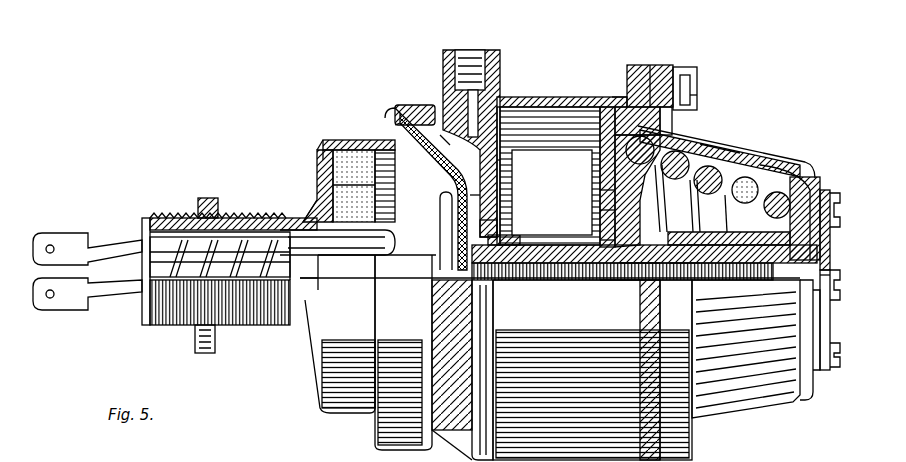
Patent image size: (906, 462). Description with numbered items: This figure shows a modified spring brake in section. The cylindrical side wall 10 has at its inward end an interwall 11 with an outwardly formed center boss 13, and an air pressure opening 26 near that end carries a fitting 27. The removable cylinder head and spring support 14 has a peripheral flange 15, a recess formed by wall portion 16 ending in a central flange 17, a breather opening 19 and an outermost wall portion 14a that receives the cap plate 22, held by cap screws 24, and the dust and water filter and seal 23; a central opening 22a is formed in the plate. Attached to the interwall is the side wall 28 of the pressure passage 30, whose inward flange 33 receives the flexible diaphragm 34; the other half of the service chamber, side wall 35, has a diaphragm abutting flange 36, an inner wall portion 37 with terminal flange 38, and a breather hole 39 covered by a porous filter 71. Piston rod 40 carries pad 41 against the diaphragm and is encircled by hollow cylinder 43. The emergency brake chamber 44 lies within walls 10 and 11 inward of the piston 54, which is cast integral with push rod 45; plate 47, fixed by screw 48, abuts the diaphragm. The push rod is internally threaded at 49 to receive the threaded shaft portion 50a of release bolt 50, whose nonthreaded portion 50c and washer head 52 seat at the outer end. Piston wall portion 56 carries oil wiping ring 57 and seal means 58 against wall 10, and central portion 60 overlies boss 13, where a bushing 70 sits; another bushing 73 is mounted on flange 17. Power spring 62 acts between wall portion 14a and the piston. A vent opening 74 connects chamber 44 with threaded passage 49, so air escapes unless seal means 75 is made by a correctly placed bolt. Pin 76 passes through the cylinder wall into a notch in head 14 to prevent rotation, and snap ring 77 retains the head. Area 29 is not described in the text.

The cylindrical side wall 10 is at (540, 97).
The interwall 11 is at (498, 160).
The interwall center boss 13 is at (500, 237).
The cylinder head and spring support 14 is at (750, 160).
The outermost wall portion of cylinder head 14a is at (800, 175).
The peripheral flange 15 is at (690, 110).
The recess wall portion 16 is at (706, 206).
The central flange 17 is at (672, 198).
The breather or vent opening 19 is at (672, 120).
The cap plate 22 is at (826, 185).
The opening in cap plate 22a is at (795, 275).
The dust and water filter and seal 23 is at (745, 189).
The cap screws 24 is at (807, 392).
The air pressure opening 26 is at (547, 176).
The fitting 27 is at (500, 58).
The side wall of pressure passage 28 is at (452, 180).
The gap 29 is at (478, 197).
The pressure passage or opening 30 is at (447, 140).
The inward flange 33 is at (422, 105).
The flexible diaphragm 34 is at (411, 155).
The service chamber side wall 35 is at (330, 140).
The diaphragm abutting flange 36 is at (390, 108).
The inner wall portion 37 is at (354, 186).
The terminal flange 38 is at (310, 210).
The breather hole 39 is at (360, 140).
The piston rod 40 is at (345, 272).
The pad 41 is at (405, 272).
The hollow cylinder 43 is at (265, 218).
The emergency or safety brake chamber 44 is at (600, 160).
The push rod 45 is at (560, 265).
The plate or disc 47 is at (440, 233).
The screw 48 is at (500, 282).
The internally threaded passage 49 is at (622, 298).
The release bolt 50 is at (680, 270).
The externally threaded shaft portion 50a is at (632, 270).
The outer nonthreaded portion 50c is at (790, 340).
The washer head 52 is at (732, 270).
The piston 54 is at (605, 190).
The circumferential wall portion 56 is at (662, 75).
The oil wiping ring 57 is at (640, 65).
The seal means 58 is at (612, 95).
The piston central portion 60 is at (610, 210).
The power spring 62 is at (725, 145).
The bushing 70 is at (521, 233).
The filter 71 is at (323, 150).
The bushing 73 is at (620, 307).
The vent opening 74 is at (615, 242).
The seal means 75 is at (729, 220).
The pin 76 is at (690, 67).
The snap ring 77 is at (700, 95).